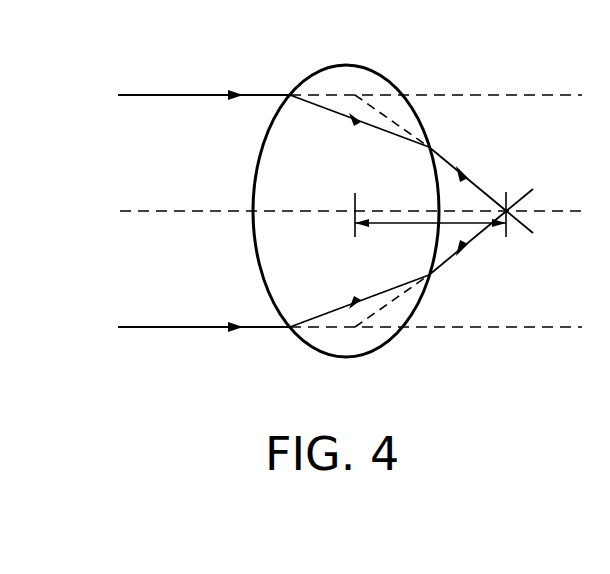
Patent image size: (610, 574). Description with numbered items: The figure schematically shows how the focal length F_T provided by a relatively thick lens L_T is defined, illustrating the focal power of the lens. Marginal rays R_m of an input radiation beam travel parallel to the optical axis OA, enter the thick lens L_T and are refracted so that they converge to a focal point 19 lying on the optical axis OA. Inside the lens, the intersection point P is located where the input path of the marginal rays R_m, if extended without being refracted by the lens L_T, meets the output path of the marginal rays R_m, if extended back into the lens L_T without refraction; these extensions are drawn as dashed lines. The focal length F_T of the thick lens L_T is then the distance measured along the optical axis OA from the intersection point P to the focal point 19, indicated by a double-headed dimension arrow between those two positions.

The focal point 19 is at (511, 198).
The intersection point P is at (357, 95).
The optical axis OA is at (138, 213).
The marginal rays Rm is at (173, 93).
The focal length FT is at (413, 225).
The relatively thick lens LT is at (312, 345).